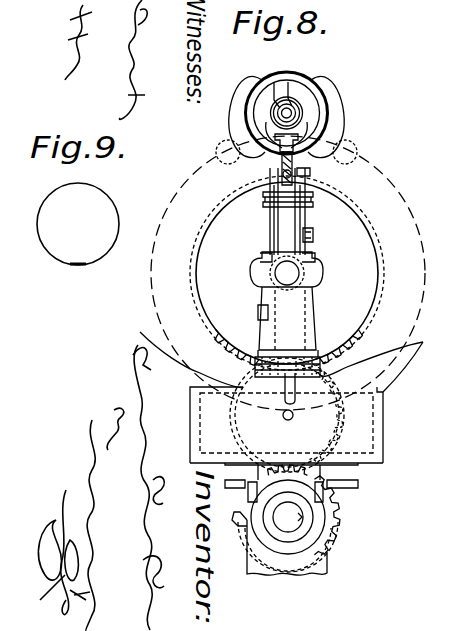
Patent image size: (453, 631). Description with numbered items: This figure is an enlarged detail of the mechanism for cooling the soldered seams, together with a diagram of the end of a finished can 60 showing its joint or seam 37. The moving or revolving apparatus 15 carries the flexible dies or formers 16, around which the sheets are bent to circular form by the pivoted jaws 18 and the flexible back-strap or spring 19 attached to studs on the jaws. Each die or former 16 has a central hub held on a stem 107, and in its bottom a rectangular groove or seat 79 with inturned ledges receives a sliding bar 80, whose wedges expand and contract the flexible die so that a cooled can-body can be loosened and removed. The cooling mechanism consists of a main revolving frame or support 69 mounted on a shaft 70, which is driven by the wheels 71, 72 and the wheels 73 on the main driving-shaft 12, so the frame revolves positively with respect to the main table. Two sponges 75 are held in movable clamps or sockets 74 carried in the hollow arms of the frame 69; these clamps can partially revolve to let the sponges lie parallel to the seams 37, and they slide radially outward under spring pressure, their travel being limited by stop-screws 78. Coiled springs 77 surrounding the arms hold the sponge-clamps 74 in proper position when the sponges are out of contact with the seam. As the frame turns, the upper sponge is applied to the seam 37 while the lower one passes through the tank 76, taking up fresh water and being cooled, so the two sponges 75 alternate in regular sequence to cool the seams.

In FIG. 8, the main driving-shaft 12 is at (325, 530).
In FIG. 8, the moving or revolving apparatus 15 is at (299, 71).
In FIG. 8, the flexible dies or formers 16 is at (262, 100).
In FIG. 8, the pivoted jaws 18 is at (338, 116).
In FIG. 8, the flexible back-strap or spring 19 is at (275, 78).
In FIG. 8, the joint or seam 37 is at (318, 112).
In FIG. 9, the joint or seam 37 is at (77, 266).
In FIG. 8, the can 60 is at (311, 170).
In FIG. 9, the can 60 is at (78, 183).
In FIG. 8, the main revolving frame or support 69 is at (279, 228).
In FIG. 8, the shaft 70 is at (277, 278).
In FIG. 8, the wheel 71 is at (378, 275).
In FIG. 8, the wheel 72 is at (376, 440).
In FIG. 8, the wheels on the main driving-shaft 73 is at (338, 508).
In FIG. 8, the movable clamps or sockets 74 is at (280, 165).
In FIG. 8, the sponges 75 is at (328, 141).
In FIG. 8, the tank 76 is at (372, 417).
In FIG. 8, the coiled springs 77 is at (311, 200).
In FIG. 8, the stop-screws 78 is at (314, 240).
In FIG. 8, the rectangular groove or seat 79 is at (262, 135).
In FIG. 8, the sliding bars 80 is at (220, 150).
In FIG. 8, the stem 107 is at (270, 113).